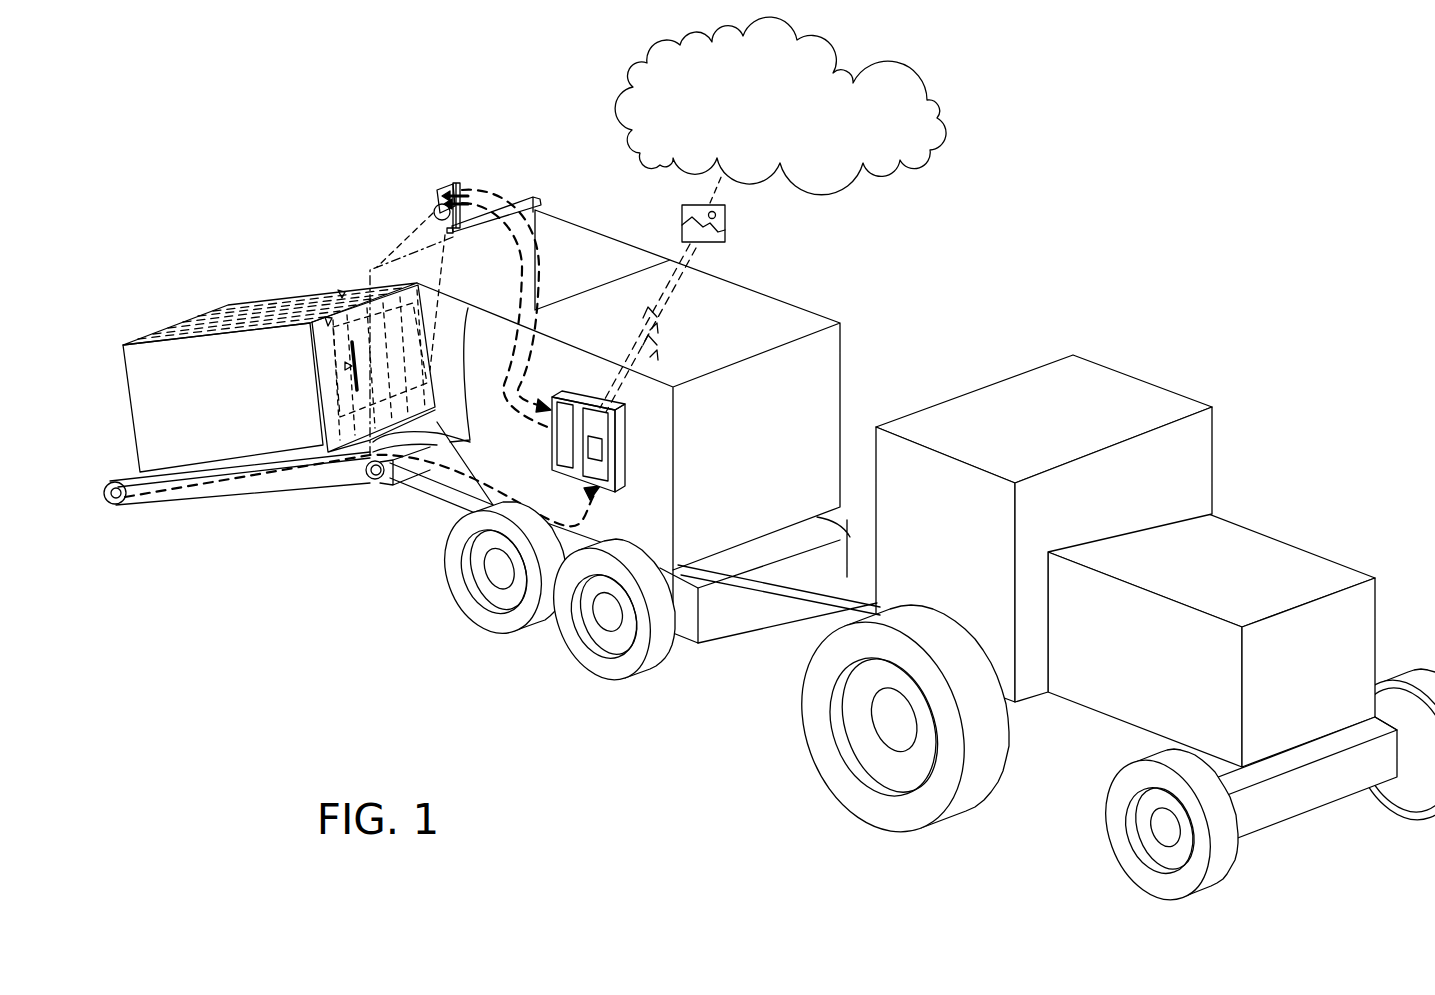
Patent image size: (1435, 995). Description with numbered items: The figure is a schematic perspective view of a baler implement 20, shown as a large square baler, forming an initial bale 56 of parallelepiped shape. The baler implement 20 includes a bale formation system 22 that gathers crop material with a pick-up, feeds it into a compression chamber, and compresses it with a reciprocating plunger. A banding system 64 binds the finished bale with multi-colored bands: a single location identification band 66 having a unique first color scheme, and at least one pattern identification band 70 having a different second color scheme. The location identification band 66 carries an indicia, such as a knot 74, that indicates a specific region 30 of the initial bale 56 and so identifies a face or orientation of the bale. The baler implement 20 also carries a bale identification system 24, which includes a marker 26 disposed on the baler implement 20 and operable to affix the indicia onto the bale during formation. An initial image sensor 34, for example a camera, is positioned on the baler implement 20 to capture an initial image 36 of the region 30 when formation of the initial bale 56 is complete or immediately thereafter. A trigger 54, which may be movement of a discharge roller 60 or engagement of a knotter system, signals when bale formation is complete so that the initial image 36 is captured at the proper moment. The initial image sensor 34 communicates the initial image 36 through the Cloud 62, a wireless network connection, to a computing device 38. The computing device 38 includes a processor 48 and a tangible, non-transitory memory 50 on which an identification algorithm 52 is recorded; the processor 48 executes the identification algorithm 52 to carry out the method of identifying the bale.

The baler implement 20 is at (592, 174).
The bale formation system 22 is at (598, 230).
The bale identification system 24 is at (643, 487).
The marker 26 is at (388, 500).
The region 30 is at (330, 436).
The initial image sensor 34 is at (447, 186).
The initial image 36 is at (726, 220).
The computing device 38 is at (545, 468).
The processor 48 is at (560, 391).
The memory 50 is at (608, 452).
The identification algorithm 52 is at (603, 443).
The trigger 54 is at (112, 505).
The initial bale 56 is at (183, 323).
The discharge roller 60 is at (110, 485).
The Cloud 62 is at (780, 118).
The banding system 64 is at (322, 310).
The location identification band 66 is at (340, 287).
The pattern identification band 70 is at (430, 363).
The knot 74 is at (345, 370).